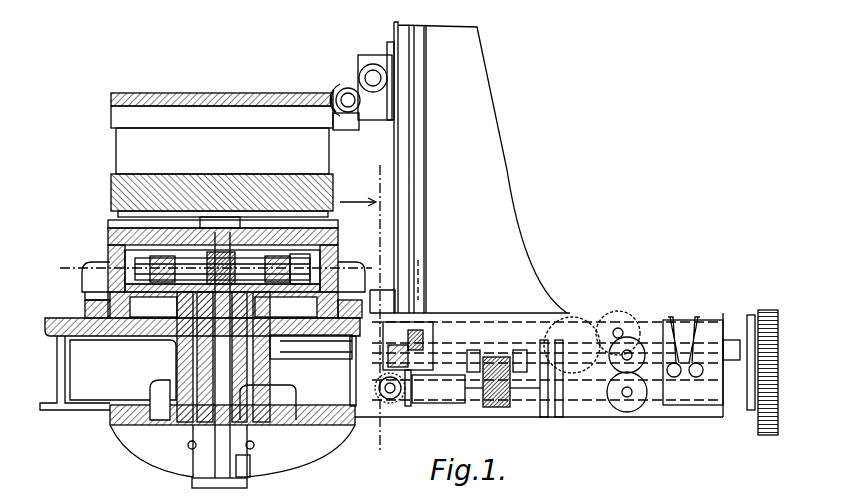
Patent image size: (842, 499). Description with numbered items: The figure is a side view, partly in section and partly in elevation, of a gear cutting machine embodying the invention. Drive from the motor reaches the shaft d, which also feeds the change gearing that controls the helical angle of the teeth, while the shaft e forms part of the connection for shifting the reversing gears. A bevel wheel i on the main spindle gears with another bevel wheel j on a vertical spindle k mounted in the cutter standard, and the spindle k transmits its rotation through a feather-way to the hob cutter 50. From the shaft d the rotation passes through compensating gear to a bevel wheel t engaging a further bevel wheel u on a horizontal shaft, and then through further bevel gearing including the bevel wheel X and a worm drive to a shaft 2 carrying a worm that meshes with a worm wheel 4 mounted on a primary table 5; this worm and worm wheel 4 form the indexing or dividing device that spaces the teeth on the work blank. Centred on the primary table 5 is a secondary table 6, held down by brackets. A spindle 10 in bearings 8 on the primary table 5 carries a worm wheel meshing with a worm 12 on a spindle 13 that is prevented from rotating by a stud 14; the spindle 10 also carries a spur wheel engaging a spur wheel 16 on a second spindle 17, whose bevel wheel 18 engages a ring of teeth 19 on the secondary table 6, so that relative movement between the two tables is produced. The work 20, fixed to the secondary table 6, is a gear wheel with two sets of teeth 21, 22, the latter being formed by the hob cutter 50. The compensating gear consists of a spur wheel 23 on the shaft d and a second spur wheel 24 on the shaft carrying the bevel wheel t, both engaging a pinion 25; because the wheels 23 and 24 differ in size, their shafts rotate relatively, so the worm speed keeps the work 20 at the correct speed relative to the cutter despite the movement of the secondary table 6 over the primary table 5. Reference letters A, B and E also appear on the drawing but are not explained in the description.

The shaft 2 is at (88, 283).
The worm wheel 4 is at (95, 308).
The primary table 5 is at (140, 290).
The secondary table 6 is at (110, 233).
The bearing 8 is at (290, 258).
The spindle 10 is at (240, 224).
The worm 12 is at (223, 355).
The spindle 13 is at (200, 470).
The stud 14 is at (248, 472).
The spur wheel 16 is at (210, 272).
The second spindle 17 is at (90, 293).
The bevel wheel 18 is at (118, 258).
The ring of teeth 19 is at (312, 266).
The work 20 is at (118, 155).
The set of teeth 21 is at (116, 193).
The set of teeth 22 is at (115, 110).
The spur wheel 23 is at (512, 405).
The second spur wheel 24 is at (488, 405).
The pinion 25 is at (495, 355).
The hob cutter 50 is at (346, 86).
The axis A is at (380, 311).
The axis B is at (209, 268).
The direction E is at (358, 193).
The bevel wheel X is at (376, 380).
The shaft d is at (545, 395).
The shaft e is at (625, 395).
The bevel wheel i is at (502, 213).
The bevel wheel j is at (418, 327).
The vertical spindle k is at (410, 262).
The bevel wheel t is at (408, 405).
The bevel wheel u is at (380, 400).